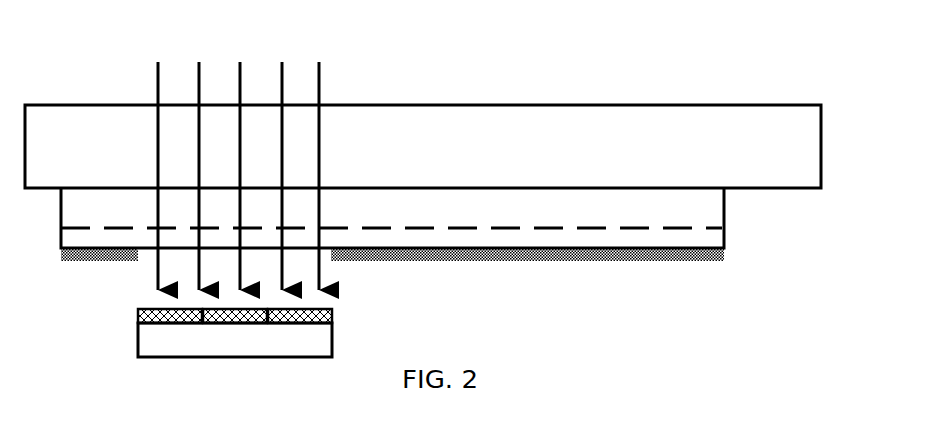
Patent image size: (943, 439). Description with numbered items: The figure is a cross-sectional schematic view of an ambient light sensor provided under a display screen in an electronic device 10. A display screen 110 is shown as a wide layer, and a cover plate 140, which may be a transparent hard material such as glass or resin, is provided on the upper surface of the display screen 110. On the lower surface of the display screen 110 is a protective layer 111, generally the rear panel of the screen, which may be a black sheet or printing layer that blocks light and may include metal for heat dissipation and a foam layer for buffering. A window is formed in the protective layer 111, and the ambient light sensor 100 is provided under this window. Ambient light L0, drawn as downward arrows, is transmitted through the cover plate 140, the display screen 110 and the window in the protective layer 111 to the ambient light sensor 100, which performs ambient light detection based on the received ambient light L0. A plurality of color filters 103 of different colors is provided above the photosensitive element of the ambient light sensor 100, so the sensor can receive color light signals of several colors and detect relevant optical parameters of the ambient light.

The electronic device 10 is at (70, 26).
The ambient light sensor 100 is at (332, 339).
The color filters 103 is at (332, 312).
The display screen 110 is at (724, 216).
The protective layer 111 is at (724, 252).
The cover plate 140 is at (821, 150).
The ambient light L0 is at (238, 161).